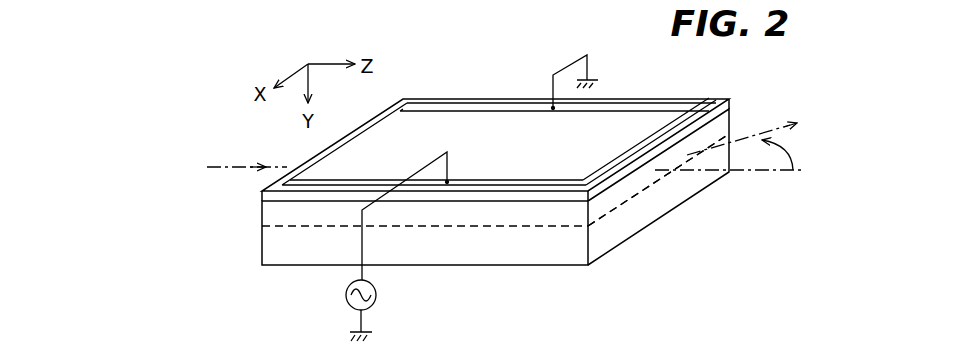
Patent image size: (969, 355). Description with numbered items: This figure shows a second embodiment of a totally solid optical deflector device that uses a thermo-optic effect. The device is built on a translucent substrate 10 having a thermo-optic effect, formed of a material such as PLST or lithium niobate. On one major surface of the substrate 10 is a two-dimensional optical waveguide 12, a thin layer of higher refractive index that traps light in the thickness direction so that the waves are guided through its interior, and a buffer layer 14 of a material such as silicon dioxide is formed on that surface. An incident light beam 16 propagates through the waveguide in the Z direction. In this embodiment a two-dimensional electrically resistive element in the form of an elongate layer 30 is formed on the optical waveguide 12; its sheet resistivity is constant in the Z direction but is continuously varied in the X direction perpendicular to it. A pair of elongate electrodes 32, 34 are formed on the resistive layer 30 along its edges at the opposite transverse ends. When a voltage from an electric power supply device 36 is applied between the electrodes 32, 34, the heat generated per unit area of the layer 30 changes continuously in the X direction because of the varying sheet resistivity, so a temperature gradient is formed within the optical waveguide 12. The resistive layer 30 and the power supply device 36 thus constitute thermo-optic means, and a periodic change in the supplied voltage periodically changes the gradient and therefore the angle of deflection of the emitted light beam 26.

The translucent substrate 10 is at (509, 256).
The two-dimensional optical waveguide 12 is at (622, 199).
The buffer layer 14 is at (730, 107).
The incident light beam 16 is at (246, 164).
The emitted light beam 26 is at (716, 148).
The electrically resistive layer 30 is at (517, 156).
The electrode 32 is at (345, 180).
The electrode 34 is at (458, 107).
The electric power supply device 36 is at (349, 303).